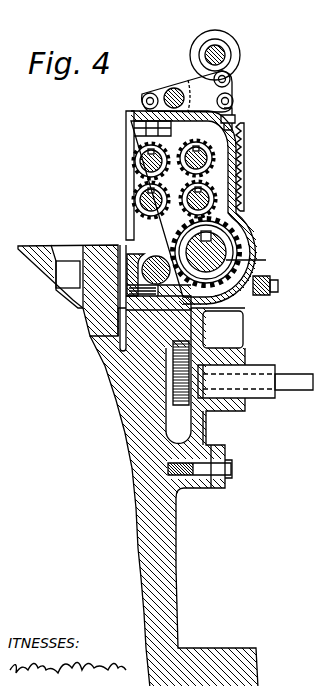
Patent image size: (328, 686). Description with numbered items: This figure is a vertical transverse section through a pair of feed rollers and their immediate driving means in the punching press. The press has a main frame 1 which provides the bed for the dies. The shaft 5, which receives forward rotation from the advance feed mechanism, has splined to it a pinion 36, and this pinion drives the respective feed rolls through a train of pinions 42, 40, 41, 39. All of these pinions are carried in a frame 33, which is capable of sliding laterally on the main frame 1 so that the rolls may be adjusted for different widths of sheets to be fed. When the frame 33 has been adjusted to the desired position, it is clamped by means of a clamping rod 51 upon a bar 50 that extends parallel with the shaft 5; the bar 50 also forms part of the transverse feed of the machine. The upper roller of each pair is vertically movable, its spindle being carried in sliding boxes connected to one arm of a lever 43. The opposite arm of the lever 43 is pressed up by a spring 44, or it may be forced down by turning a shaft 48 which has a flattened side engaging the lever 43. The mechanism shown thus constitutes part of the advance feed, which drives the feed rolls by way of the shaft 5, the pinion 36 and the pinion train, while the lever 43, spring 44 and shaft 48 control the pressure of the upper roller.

The frame 1 is at (174, 465).
The shaft 5 is at (253, 260).
The frame 33 is at (236, 299).
The pinion 36 is at (239, 236).
The pinion 39 is at (124, 150).
The pinion 40 is at (124, 236).
The pinion 41 is at (231, 131).
The pinion 42 is at (210, 192).
The lever 43 is at (172, 74).
The spring 44 is at (230, 165).
The shaft 48 is at (224, 47).
The bar 50 is at (82, 240).
The clamping rod 51 is at (270, 277).